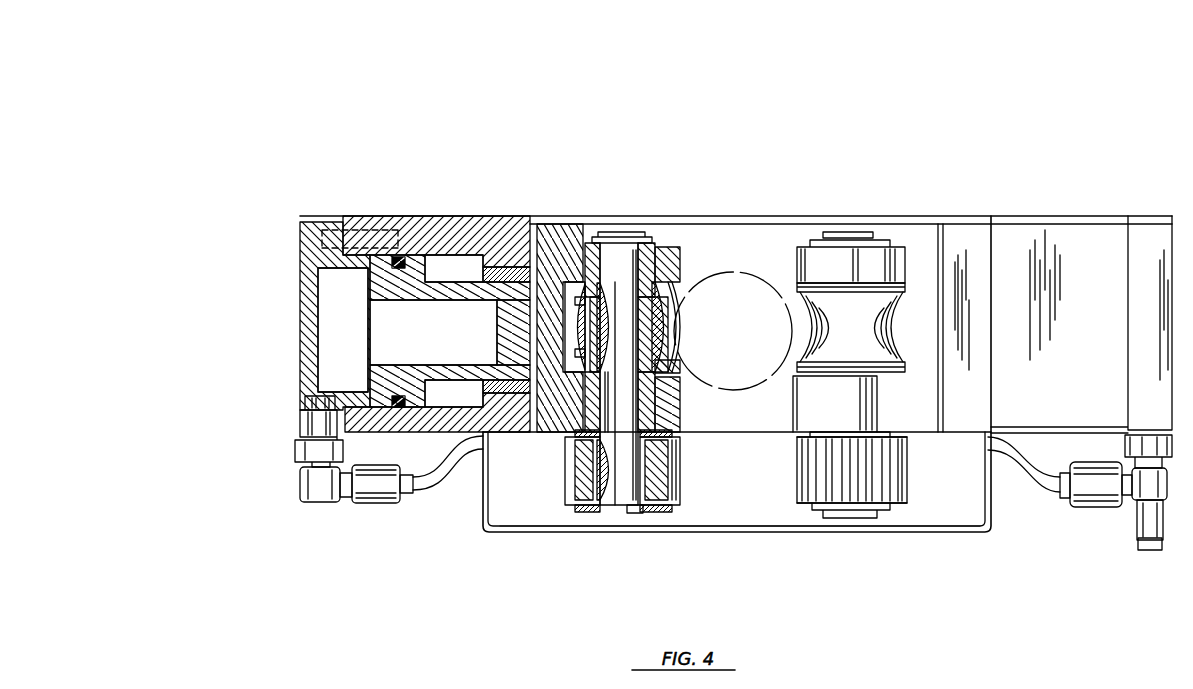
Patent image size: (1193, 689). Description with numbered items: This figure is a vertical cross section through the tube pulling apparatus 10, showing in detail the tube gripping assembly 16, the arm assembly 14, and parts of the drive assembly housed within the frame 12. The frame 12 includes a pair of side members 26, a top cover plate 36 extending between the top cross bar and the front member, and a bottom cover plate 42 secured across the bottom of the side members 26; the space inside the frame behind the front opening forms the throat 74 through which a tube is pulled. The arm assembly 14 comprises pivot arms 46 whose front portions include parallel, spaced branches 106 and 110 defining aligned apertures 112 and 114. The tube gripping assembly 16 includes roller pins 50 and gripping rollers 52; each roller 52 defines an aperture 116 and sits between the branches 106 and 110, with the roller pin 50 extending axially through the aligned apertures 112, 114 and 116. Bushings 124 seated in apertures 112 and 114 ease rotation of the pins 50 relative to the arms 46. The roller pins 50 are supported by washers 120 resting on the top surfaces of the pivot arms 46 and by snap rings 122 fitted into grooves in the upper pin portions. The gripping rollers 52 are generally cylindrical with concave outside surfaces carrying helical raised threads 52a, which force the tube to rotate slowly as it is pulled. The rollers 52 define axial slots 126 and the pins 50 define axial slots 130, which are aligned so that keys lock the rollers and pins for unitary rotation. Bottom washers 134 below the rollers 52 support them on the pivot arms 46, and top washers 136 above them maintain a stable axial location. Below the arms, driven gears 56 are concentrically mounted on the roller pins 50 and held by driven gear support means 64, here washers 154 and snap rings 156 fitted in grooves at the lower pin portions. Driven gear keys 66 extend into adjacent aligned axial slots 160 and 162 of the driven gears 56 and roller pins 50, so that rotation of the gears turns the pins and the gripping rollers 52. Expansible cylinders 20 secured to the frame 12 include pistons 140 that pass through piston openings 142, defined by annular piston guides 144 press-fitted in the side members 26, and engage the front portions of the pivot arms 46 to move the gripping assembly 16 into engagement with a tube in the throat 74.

The tube pulling apparatus 10 is at (1027, 101).
The frame 12 is at (489, 189).
The arm assembly 14 is at (700, 224).
The tube gripping assembly 16 is at (684, 306).
The expansible cylinders 20 is at (313, 206).
The side members 26 is at (492, 215).
The top cover plate 36 is at (868, 215).
The bottom cover plate 42 is at (957, 532).
The pivot arms 46 is at (541, 434).
The roller pins 50 is at (608, 236).
The gripping rollers 52 is at (672, 333).
The raised threads 52a is at (682, 340).
The driven gears 56 is at (660, 488).
The driven gear support means 64 is at (585, 519).
The driven gear keys 66 is at (580, 322).
The throat 74 is at (770, 263).
The branch 106 is at (556, 256).
The branch 110 is at (670, 424).
The aperture 112 is at (576, 244).
The aperture 114 is at (640, 406).
The aperture 116 is at (676, 350).
The washers 120 is at (660, 236).
The snap rings 122 is at (633, 232).
The bushings 124 is at (680, 258).
The axial slots 126 is at (583, 338).
The axial slots 130 is at (583, 300).
The bottom washers 134 is at (677, 366).
The top washers 136 is at (675, 278).
The pistons 140 is at (384, 285).
The piston openings 142 is at (407, 217).
The piston guides 144 is at (437, 214).
The washers 154 is at (656, 510).
The snap rings 156 is at (629, 514).
The axial slot 160 is at (623, 495).
The axial slot 162 is at (489, 516).